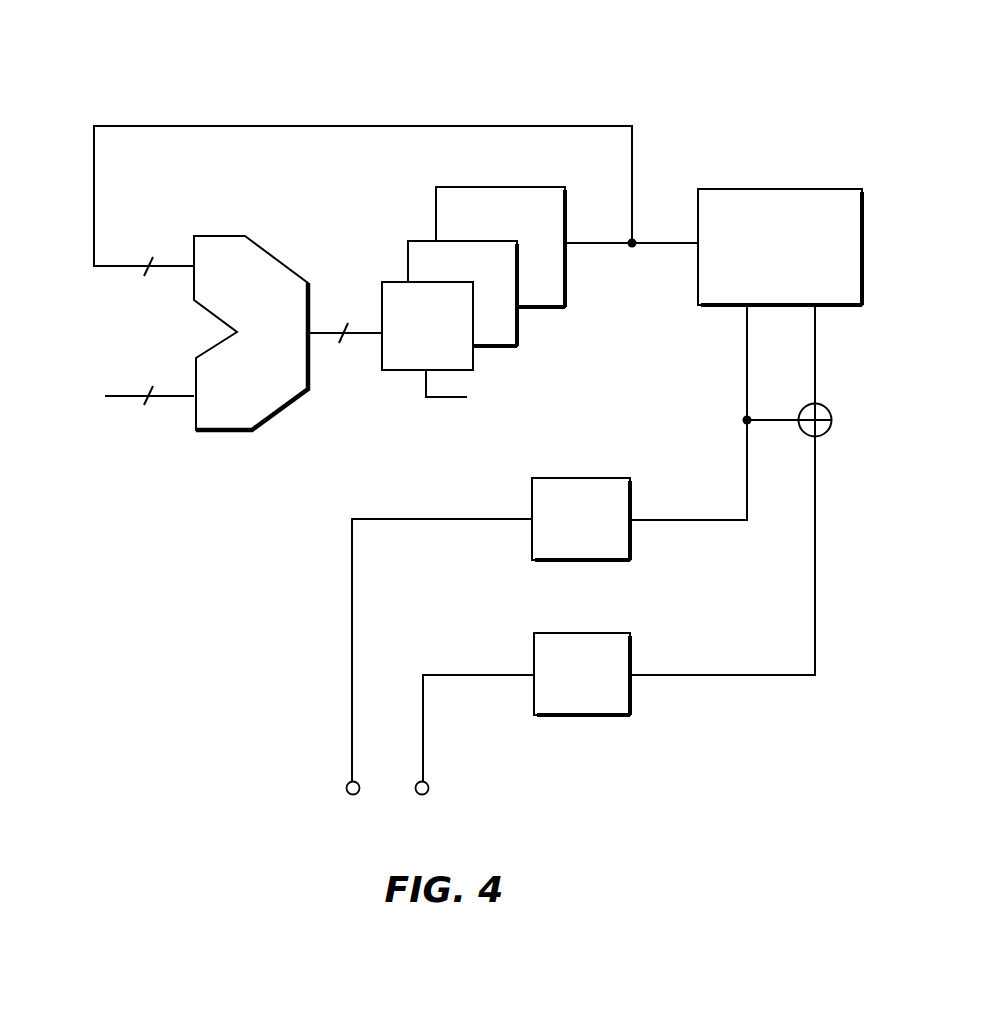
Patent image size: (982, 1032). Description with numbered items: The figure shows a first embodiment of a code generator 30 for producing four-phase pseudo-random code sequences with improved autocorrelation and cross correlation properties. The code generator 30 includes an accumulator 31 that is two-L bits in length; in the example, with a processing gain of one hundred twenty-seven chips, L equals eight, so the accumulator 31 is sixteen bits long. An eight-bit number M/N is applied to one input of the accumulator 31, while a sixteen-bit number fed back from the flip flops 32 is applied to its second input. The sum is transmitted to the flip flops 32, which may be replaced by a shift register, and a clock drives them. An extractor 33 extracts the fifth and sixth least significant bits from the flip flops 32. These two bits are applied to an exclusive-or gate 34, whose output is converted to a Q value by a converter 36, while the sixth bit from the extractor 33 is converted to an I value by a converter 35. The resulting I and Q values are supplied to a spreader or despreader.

The code generator 30 is at (365, 92).
The accumulator 31 is at (232, 399).
The flip flops 32 is at (470, 297).
The extractor 33 is at (757, 189).
The exclusive-or gate 34 is at (822, 406).
The converter 35 is at (570, 478).
The converter 36 is at (600, 633).